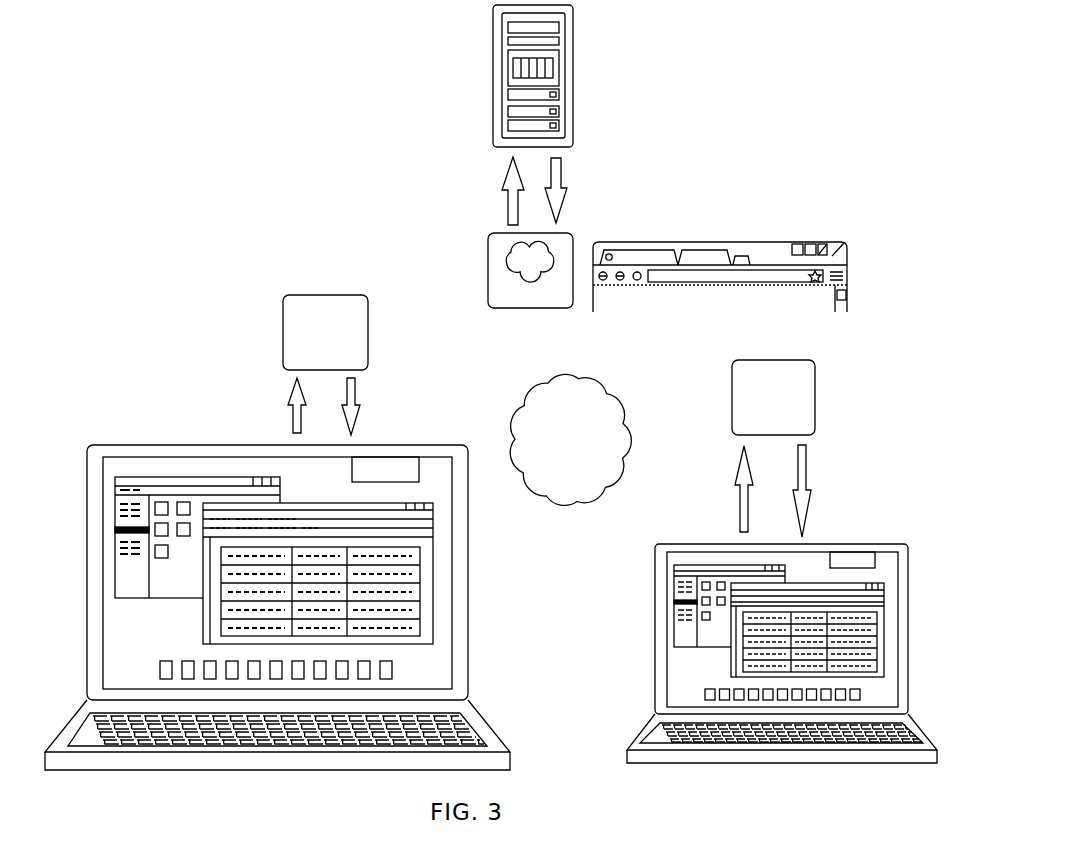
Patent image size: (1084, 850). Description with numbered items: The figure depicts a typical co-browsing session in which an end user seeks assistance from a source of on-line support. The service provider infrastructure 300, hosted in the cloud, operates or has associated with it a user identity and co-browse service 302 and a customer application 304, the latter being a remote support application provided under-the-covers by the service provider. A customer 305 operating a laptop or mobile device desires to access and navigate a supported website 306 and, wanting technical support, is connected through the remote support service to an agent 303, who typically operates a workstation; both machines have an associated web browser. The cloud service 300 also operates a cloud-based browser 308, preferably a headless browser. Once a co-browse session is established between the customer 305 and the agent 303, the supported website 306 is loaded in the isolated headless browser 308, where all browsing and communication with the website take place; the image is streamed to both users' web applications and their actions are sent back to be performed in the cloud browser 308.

The service provider infrastructure 300 is at (487, 271).
The user identity and co-browse service 302 is at (282, 332).
The agent 303 is at (222, 444).
The customer application 304 is at (731, 398).
The customer 305 is at (961, 628).
The supported website 306 is at (617, 73).
The cloud-based browser 308 is at (640, 250).